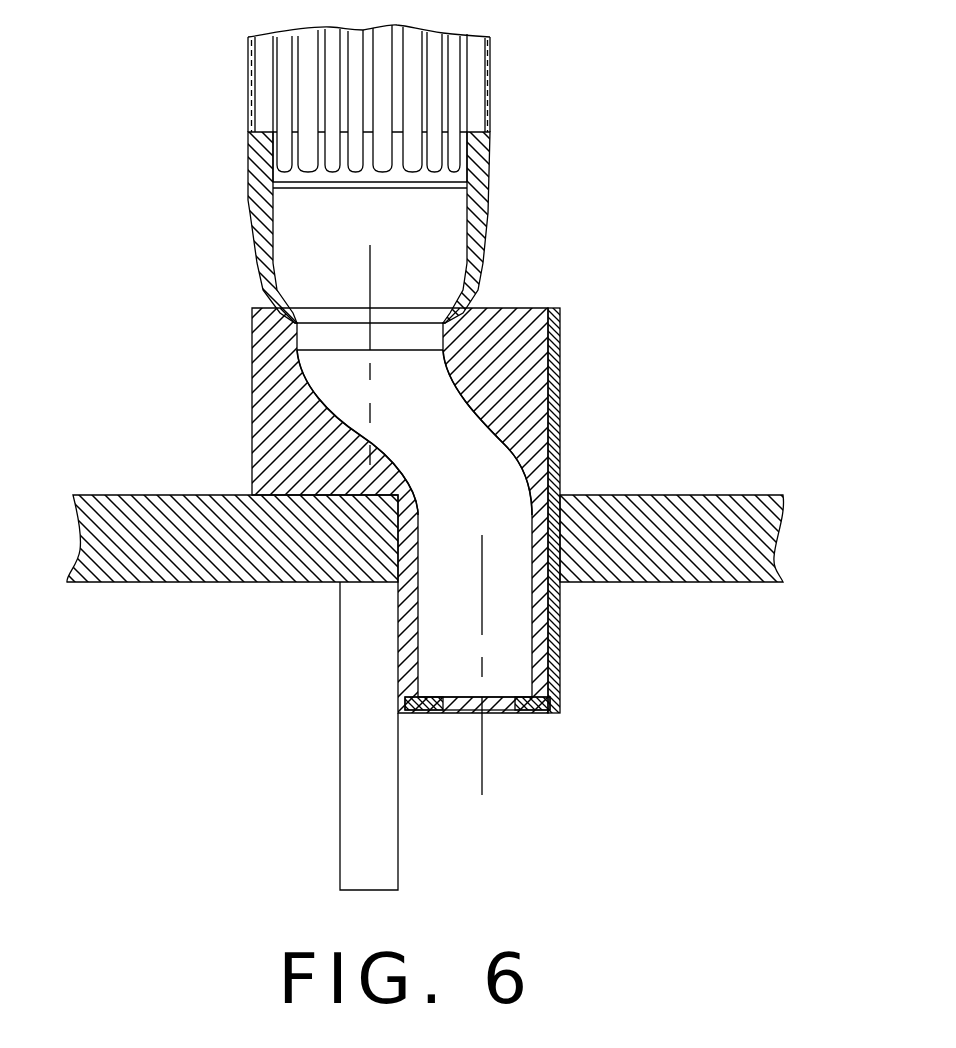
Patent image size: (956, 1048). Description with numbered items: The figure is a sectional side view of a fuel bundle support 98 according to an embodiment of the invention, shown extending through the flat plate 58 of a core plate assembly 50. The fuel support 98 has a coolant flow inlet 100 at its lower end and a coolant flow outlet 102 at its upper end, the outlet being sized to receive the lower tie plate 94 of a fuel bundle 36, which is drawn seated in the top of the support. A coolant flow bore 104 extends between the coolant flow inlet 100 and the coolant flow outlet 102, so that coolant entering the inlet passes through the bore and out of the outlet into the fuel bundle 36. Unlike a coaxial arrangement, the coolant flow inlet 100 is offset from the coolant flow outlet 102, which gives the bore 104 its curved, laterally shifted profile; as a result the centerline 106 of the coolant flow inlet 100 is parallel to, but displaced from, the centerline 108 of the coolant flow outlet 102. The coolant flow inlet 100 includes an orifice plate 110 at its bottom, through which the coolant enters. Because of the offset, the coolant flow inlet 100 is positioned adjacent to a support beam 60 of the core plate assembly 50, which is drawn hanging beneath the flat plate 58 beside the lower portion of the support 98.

The fuel bundle 36 is at (490, 92).
The core plate assembly 50 is at (693, 462).
The flat plate 58 is at (735, 493).
The support beam 60 is at (340, 835).
The lower tie plate 94 is at (490, 205).
The fuel bundle support 98 is at (560, 343).
The coolant flow inlet 100 is at (540, 715).
The coolant flow outlet 102 is at (400, 332).
The coolant flow bore 104 is at (463, 460).
The centerline of coolant flow inlet 106 is at (483, 555).
The centerline of coolant flow outlet 108 is at (370, 270).
The orifice plate 110 is at (433, 713).